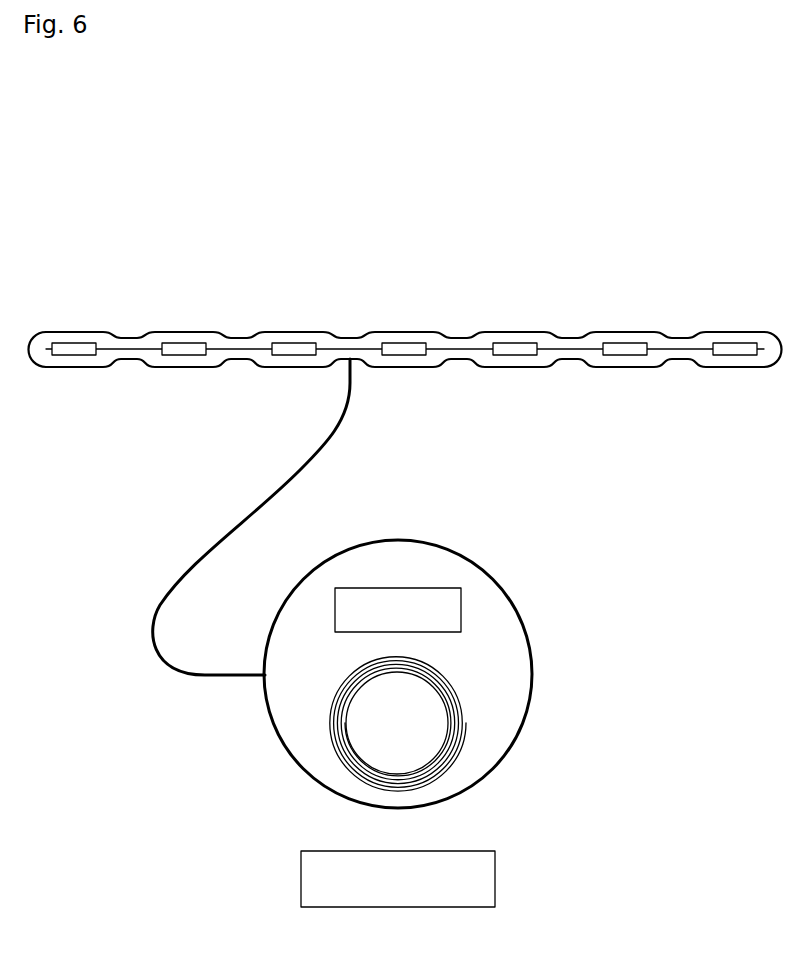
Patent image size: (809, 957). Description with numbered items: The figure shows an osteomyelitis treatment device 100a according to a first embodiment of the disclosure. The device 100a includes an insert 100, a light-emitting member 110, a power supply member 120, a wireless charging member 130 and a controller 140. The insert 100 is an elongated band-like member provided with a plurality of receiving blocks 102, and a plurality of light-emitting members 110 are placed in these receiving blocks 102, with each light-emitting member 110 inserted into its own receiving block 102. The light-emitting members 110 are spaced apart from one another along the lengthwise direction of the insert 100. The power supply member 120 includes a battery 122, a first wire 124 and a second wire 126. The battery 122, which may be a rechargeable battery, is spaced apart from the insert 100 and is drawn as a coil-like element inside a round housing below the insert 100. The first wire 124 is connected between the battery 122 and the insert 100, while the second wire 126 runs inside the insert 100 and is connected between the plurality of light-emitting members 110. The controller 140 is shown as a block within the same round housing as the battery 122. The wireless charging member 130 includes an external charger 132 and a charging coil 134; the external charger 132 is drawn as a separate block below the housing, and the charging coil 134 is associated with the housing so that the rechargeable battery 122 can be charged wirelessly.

The insert 100 is at (634, 205).
The osteomyelitis treatment device 100a is at (332, 112).
The receiving block 102 is at (737, 332).
The light-emitting member 110 is at (294, 355).
The power supply member 120 is at (626, 452).
The battery 122 is at (410, 722).
The first wire 124 is at (298, 467).
The second wire 126 is at (458, 348).
The wireless charging member 130 is at (633, 788).
The external charger 132 is at (495, 878).
The charging coil 134 is at (467, 725).
The controller 140 is at (398, 588).